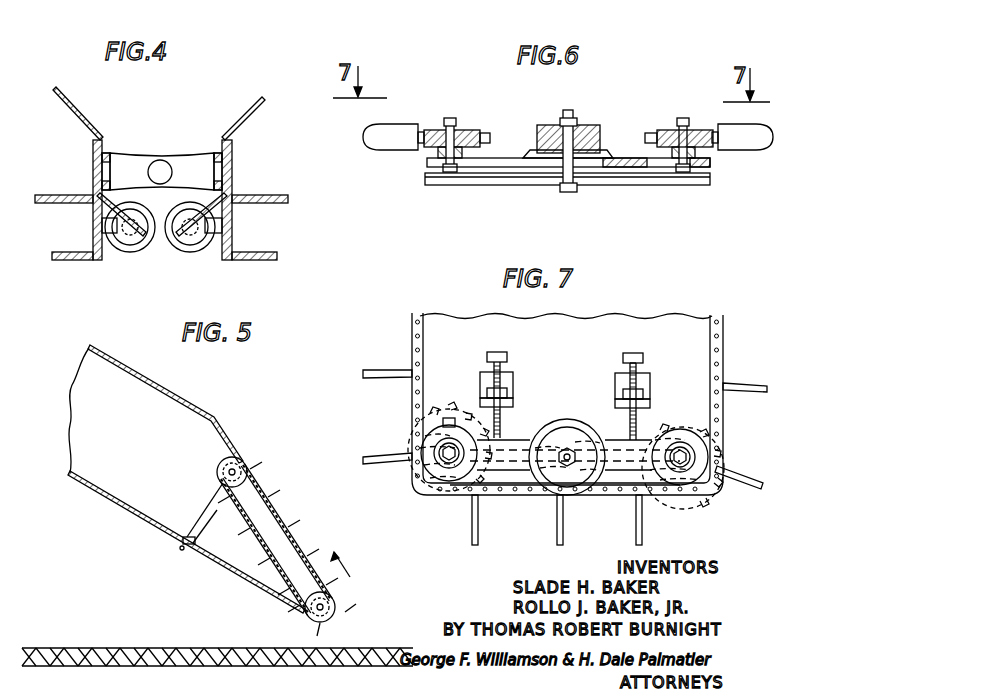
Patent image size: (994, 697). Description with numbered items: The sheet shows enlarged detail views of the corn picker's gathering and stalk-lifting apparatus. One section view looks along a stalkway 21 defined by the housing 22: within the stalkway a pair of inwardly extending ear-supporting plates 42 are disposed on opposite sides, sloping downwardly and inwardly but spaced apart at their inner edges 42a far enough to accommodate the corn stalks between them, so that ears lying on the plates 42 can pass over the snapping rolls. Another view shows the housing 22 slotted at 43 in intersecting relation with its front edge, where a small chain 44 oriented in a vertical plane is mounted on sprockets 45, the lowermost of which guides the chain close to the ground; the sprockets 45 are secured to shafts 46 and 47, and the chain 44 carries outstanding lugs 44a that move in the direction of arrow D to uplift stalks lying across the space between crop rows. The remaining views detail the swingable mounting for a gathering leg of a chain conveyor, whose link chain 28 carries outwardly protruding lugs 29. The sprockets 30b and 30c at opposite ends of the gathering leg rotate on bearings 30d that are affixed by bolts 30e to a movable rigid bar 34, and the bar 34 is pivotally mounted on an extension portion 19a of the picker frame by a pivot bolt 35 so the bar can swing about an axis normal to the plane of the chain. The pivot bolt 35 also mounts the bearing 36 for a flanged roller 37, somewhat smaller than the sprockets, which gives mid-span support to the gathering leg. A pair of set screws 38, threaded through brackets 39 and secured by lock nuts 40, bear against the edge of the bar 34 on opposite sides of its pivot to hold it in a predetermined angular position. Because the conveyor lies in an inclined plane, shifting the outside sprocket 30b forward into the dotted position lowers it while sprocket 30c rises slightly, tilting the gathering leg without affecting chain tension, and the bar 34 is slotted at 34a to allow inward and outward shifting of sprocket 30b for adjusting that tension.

In FIG. 6, the extension portion 19a is at (497, 177).
In FIG. 7, the extension portion 19a is at (623, 325).
In FIG. 4, the stalkway 21 is at (157, 197).
In FIG. 4, the housing 22 is at (240, 120).
In FIG. 5, the housing 22 is at (180, 393).
In FIG. 4, the link chain 28 is at (220, 153).
In FIG. 6, the link chain 28 is at (420, 125).
In FIG. 4, the lug 29 is at (150, 168).
In FIG. 6, the lug 29 is at (370, 135).
In FIG. 7, the lug 29 is at (557, 525).
In FIG. 6, the sprocket 30b is at (660, 137).
In FIG. 7, the sprocket 30b is at (687, 482).
In FIG. 6, the sprocket 30c is at (473, 130).
In FIG. 7, the sprocket 30c is at (430, 467).
In FIG. 6, the bearing 30d is at (443, 145).
In FIG. 6, the bolt 30e is at (450, 118).
In FIG. 7, the bolt 30e is at (433, 452).
In FIG. 6, the movable rigid bar 34 is at (507, 158).
In FIG. 7, the movable rigid bar 34 is at (565, 462).
In FIG. 6, the slot 34a is at (655, 162).
In FIG. 7, the slot 34a is at (633, 455).
In FIG. 6, the pivot bolt 35 is at (568, 112).
In FIG. 7, the pivot bolt 35 is at (572, 452).
In FIG. 6, the bearing 36 is at (600, 135).
In FIG. 6, the flanged roller 37 is at (548, 127).
In FIG. 7, the flanged roller 37 is at (545, 437).
In FIG. 7, the set screw 38 is at (623, 357).
In FIG. 7, the bracket 39 is at (615, 403).
In FIG. 7, the lock nut 40 is at (620, 393).
In FIG. 4, the ear-supporting plate 42 is at (100, 221).
In FIG. 4, the inner edge 42a is at (177, 238).
In FIG. 5, the slot 43 is at (232, 445).
In FIG. 5, the small chain 44 is at (283, 512).
In FIG. 5, the lug 44a is at (262, 462).
In FIG. 5, the sprocket 45 is at (217, 476).
In FIG. 5, the shaft 46 is at (337, 607).
In FIG. 5, the shaft 47 is at (223, 460).
In FIG. 5, the arrow D is at (350, 565).